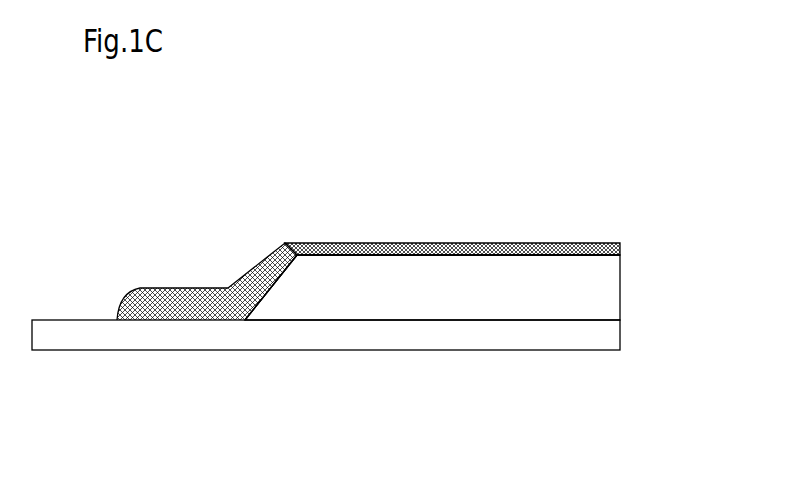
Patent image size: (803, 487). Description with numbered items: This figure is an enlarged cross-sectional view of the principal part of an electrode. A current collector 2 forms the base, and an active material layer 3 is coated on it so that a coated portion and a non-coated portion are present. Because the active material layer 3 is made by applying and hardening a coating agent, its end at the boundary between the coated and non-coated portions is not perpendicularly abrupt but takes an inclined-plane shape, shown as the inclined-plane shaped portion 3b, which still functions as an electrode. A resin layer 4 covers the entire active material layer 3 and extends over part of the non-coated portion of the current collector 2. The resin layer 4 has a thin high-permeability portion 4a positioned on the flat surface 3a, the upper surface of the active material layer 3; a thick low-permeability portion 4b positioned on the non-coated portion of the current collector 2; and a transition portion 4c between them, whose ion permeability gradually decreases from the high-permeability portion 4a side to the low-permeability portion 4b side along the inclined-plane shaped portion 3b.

The current collector 2 is at (465, 335).
The active material layer 3 is at (492, 223).
The flat surface 3a is at (415, 243).
The inclined-plane shaped portion 3b is at (277, 241).
The resin layer 4 is at (368, 211).
The high-permeability portion 4a is at (350, 243).
The low-permeability portion 4b is at (163, 302).
The transition portion 4c is at (261, 263).